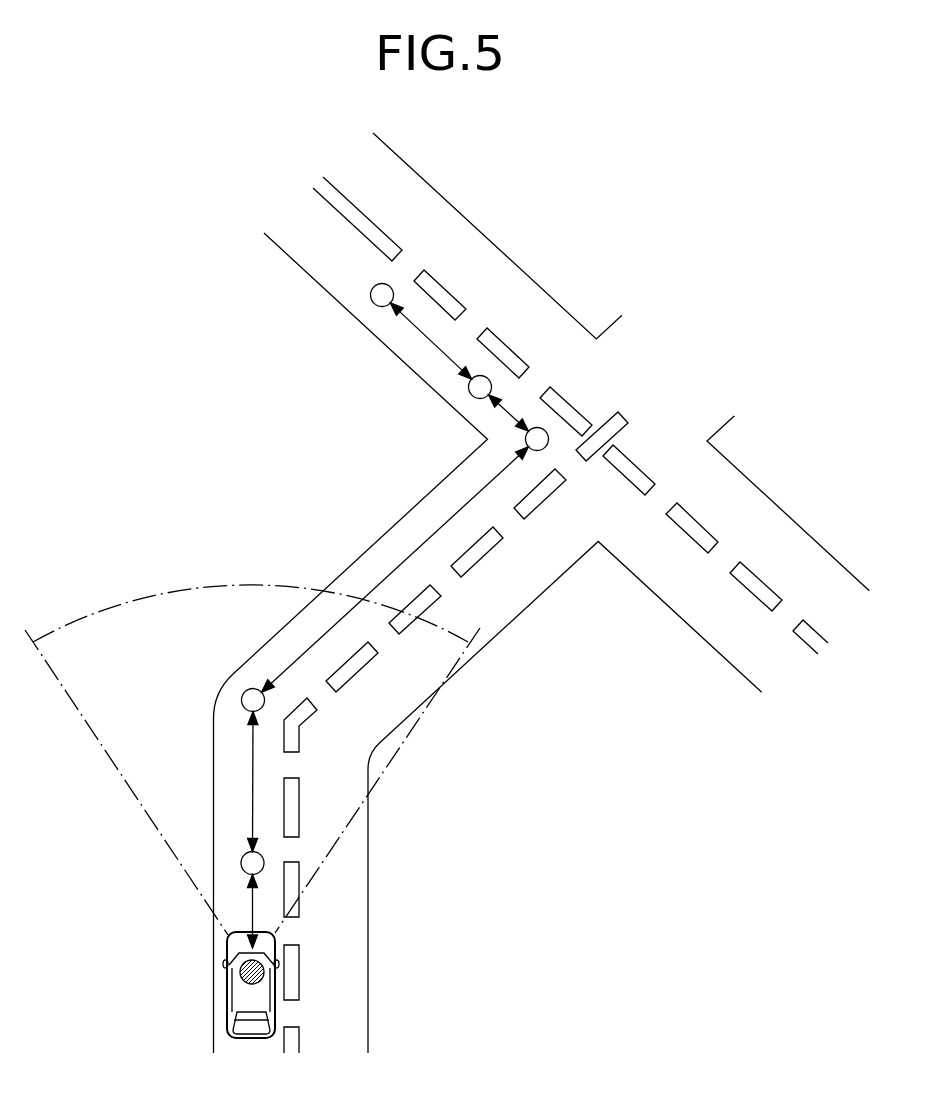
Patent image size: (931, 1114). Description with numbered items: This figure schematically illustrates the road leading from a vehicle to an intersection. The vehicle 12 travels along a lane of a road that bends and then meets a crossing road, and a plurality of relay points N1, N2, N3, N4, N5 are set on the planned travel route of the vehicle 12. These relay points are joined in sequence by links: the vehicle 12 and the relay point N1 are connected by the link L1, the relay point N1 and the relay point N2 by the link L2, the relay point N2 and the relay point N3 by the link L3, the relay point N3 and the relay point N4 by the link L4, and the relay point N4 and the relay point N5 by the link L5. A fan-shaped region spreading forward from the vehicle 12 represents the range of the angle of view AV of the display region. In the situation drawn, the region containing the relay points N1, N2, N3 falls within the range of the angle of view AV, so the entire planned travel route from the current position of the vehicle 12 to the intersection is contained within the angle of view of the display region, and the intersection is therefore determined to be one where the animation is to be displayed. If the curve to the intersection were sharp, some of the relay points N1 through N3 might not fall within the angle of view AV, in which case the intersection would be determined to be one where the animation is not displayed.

The vehicle 12 is at (228, 985).
The relay point N1 is at (221, 852).
The relay point N2 is at (214, 696).
The relay point N3 is at (482, 445).
The relay point N4 is at (447, 403).
The relay point N5 is at (355, 320).
The link L1 is at (253, 922).
The link L2 is at (253, 772).
The link L3 is at (327, 630).
The link L4 is at (510, 405).
The link L5 is at (440, 348).
The angle of view AV is at (173, 592).